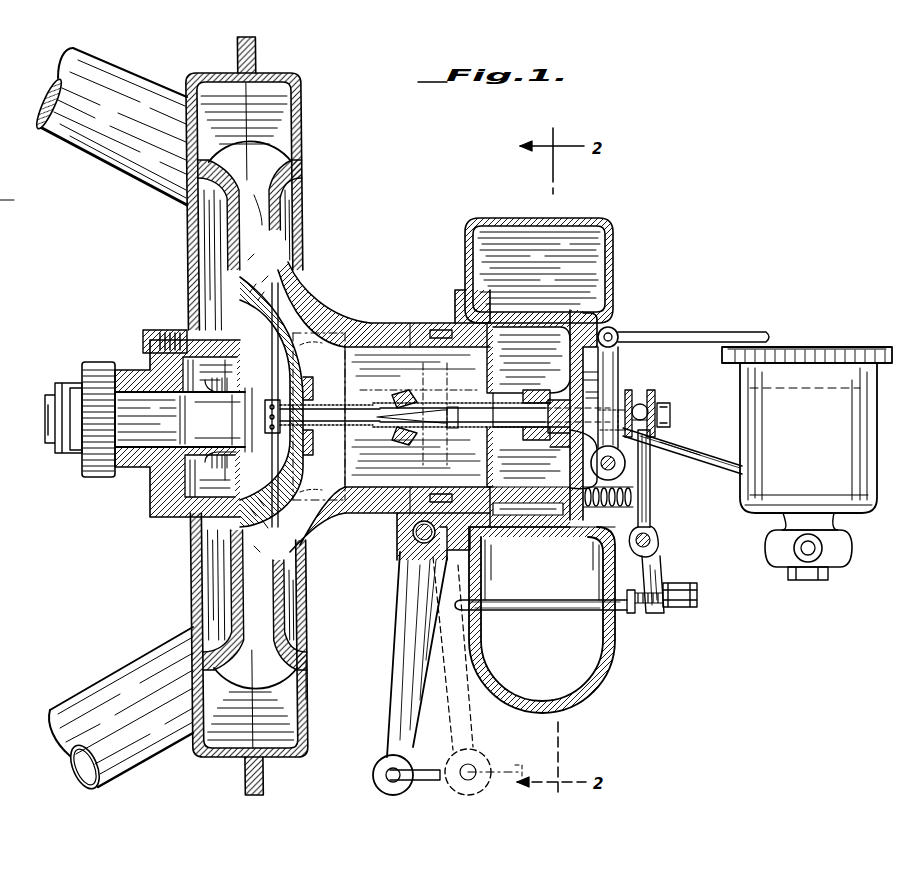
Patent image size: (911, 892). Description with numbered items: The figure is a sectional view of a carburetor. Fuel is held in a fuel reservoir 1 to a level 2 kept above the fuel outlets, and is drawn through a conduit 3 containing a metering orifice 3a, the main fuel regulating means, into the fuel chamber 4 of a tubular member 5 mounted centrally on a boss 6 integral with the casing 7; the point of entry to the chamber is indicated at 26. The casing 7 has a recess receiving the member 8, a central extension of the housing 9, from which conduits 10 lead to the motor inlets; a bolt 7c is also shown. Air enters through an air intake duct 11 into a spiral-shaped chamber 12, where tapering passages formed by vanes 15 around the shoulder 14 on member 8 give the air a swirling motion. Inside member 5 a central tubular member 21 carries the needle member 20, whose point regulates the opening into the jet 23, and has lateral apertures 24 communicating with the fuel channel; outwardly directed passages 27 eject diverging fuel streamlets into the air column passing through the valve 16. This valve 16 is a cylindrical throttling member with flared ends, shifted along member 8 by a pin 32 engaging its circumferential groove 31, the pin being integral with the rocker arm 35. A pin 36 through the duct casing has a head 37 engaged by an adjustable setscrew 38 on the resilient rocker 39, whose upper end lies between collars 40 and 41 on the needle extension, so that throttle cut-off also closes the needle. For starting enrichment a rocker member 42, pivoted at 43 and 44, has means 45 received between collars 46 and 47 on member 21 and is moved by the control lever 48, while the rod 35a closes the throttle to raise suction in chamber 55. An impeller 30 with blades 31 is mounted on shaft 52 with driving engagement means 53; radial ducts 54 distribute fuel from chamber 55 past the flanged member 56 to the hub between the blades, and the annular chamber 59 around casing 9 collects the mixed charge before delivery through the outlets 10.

The fuel reservoir 1 is at (864, 457).
The fuel level 2 is at (860, 386).
The conduit 3 is at (712, 466).
The metering orifice 3a is at (692, 446).
The fuel chamber 4 is at (561, 370).
The tubular member 5 is at (488, 406).
The boss 6 is at (512, 510).
The casing 7 is at (610, 266).
The housing bolt 7c is at (207, 322).
The member 8 is at (392, 323).
The housing 9 is at (300, 186).
The conduits 10 is at (108, 160).
The air intake duct 11 is at (613, 667).
The spiral-shaped chamber 12 is at (522, 500).
The shoulder 14 is at (478, 306).
The vanes 15 is at (508, 500).
The valve 16 is at (366, 323).
The needle member 20 is at (30, 178).
The central tubular member 21 is at (445, 426).
The jet 23 is at (313, 484).
The lateral apertures 24 is at (525, 436).
The point of entry 26 is at (586, 373).
The outwardly directed passages 27 is at (393, 398).
The impeller 30 is at (326, 316).
The blades 31 is at (262, 212).
The pin 32 is at (452, 430).
The rocker arm 35 is at (392, 728).
The rod 35a is at (466, 752).
The pin 36 is at (487, 610).
The head 37 is at (636, 622).
The adjustable setscrew 38 is at (652, 612).
The resilient rocker 39 is at (651, 512).
The collar 40 is at (651, 393).
The collar 41 is at (675, 387).
The rocker member 42 is at (616, 347).
The pivot means 43 is at (626, 466).
The pivot means 44 is at (604, 438).
The means 45 is at (628, 394).
The collar 46 is at (586, 380).
The collar 47 is at (640, 404).
The control lever 48 is at (650, 334).
The shaft 52 is at (150, 470).
The driving engagement means 53 is at (96, 362).
The radial ducts 54 is at (285, 308).
The chamber 55 is at (247, 421).
The flanged member 56 is at (314, 386).
The annular chamber 59 is at (310, 684).